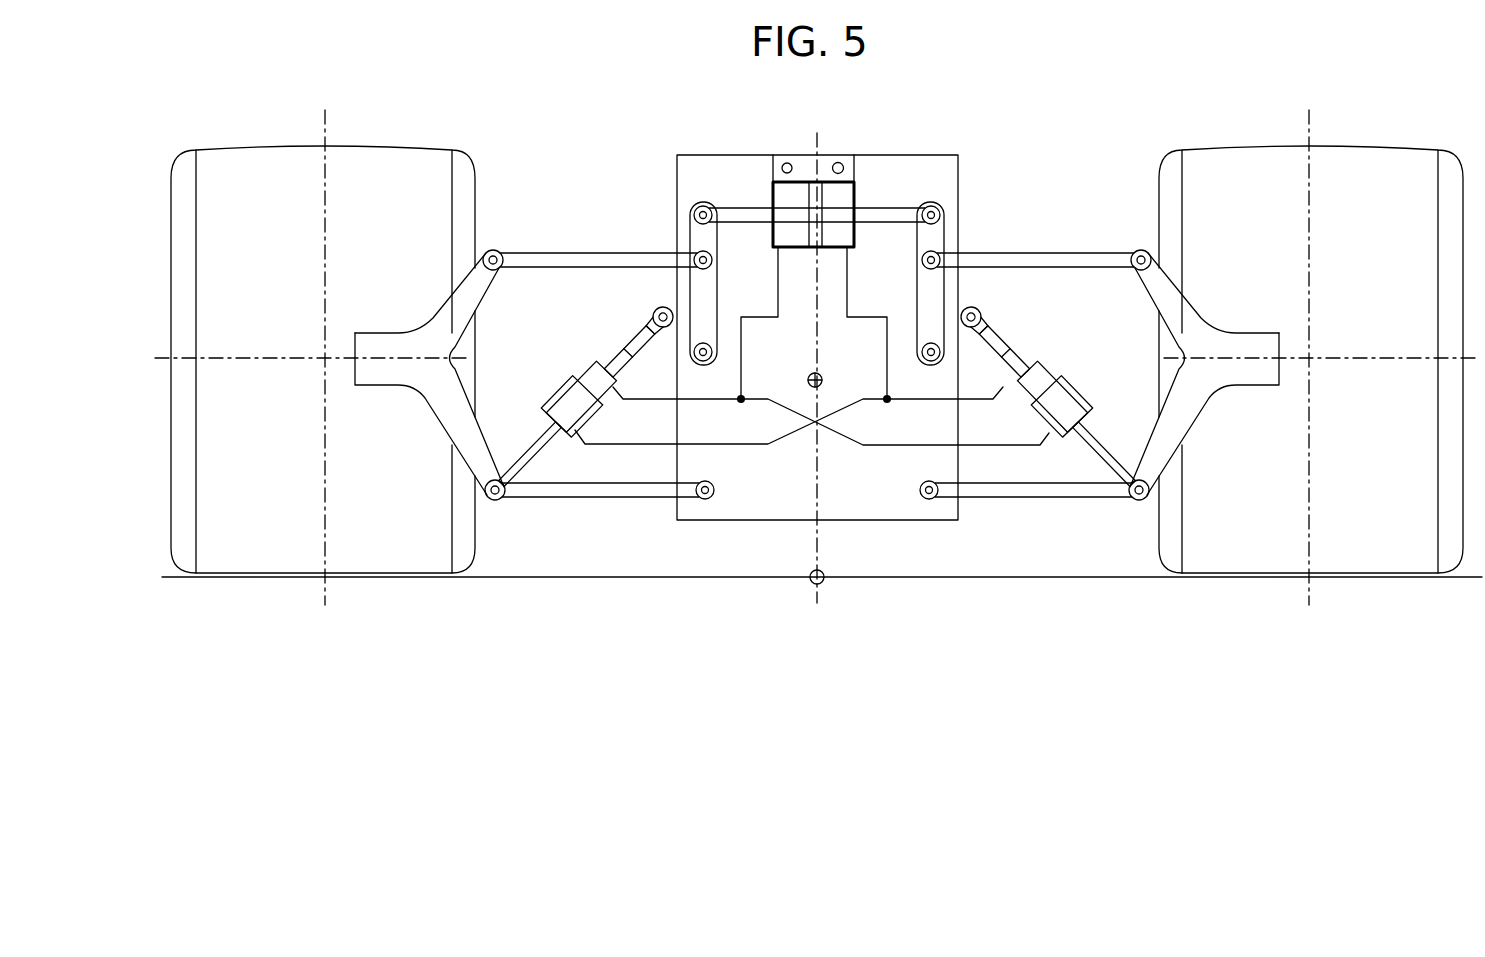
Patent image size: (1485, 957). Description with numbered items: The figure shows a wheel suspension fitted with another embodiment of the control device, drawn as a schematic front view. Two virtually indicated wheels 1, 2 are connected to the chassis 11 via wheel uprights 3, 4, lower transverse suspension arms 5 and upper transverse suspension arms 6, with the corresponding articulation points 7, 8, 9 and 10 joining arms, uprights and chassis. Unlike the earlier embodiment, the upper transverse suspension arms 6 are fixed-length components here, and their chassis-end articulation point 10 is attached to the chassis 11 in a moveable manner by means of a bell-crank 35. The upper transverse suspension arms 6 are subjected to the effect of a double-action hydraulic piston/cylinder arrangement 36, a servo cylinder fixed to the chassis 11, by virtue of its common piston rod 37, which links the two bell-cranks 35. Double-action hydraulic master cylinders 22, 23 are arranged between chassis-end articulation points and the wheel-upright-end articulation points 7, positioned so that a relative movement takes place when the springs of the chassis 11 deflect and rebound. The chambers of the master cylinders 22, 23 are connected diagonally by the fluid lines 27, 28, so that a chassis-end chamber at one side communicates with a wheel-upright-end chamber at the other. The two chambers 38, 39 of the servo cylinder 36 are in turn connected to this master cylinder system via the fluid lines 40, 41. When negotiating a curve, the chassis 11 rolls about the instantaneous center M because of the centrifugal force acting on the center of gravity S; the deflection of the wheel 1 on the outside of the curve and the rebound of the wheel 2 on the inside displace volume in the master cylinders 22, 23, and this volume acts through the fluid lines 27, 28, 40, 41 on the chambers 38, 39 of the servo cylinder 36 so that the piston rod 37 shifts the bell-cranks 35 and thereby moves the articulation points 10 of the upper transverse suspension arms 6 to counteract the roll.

The wheel 1 is at (232, 172).
The wheel 2 is at (1388, 168).
The wheel upright 3 is at (377, 374).
The wheel upright 4 is at (1257, 374).
The lower transverse suspension arm 5 is at (578, 498).
The upper transverse suspension arm 6 is at (588, 253).
The wheel-upright-end articulation point 7 is at (502, 502).
The articulation point 8 is at (706, 502).
The articulation point 9 is at (494, 252).
The chassis-end articulation point 10 is at (713, 262).
The chassis 11 is at (785, 498).
The master cylinder 22 is at (563, 383).
The master cylinder 23 is at (1071, 383).
The fluid line 27 is at (738, 445).
The fluid line 28 is at (885, 446).
The bell-crank 35 is at (695, 293).
The double-action hydraulic piston/cylinder arrangement 36 is at (858, 191).
The common piston rod 37 is at (745, 218).
The chamber 38 is at (795, 195).
The chamber 39 is at (837, 193).
The fluid line 40 is at (743, 344).
The fluid line 41 is at (881, 344).
The center of gravity S is at (824, 381).
The instantaneous center M is at (825, 582).